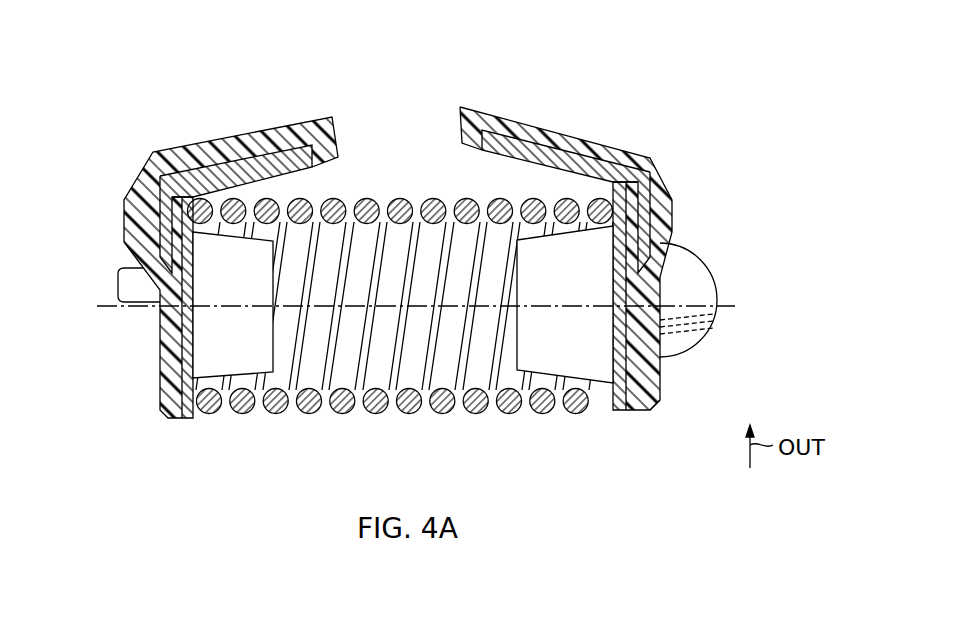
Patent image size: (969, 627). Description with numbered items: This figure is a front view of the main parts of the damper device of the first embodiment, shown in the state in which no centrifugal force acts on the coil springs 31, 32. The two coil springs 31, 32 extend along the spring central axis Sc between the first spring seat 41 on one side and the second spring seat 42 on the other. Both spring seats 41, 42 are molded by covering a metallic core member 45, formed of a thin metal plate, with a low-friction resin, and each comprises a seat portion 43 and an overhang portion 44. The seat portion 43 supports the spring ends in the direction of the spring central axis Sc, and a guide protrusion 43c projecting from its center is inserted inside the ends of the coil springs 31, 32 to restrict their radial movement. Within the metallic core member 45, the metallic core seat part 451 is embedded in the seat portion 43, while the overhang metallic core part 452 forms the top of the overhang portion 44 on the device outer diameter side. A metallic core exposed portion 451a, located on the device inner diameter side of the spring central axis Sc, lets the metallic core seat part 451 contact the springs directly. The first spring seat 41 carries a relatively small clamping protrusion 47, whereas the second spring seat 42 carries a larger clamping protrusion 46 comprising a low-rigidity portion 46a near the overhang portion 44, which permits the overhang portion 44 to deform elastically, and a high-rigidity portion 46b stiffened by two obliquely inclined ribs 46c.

The coil spring 31 is at (401, 337).
The coil spring 32 is at (310, 395).
The first spring seat 41 is at (124, 191).
The second spring seat 42 is at (656, 166).
The seat portion 43 is at (160, 370).
The guide protrusion 43c is at (238, 357).
The overhang portion 44 is at (240, 128).
The metallic core member 45 is at (411, 227).
The metallic core seat part 451 is at (160, 211).
The metallic core exposed portion 451a is at (612, 372).
The overhang metallic core part 452 is at (401, 141).
The clamping protrusion 46 is at (724, 311).
The low-rigidity portion 46a is at (690, 256).
The high-rigidity portion 46b is at (673, 345).
The rib 46c is at (682, 328).
The clamping protrusion 47 is at (118, 279).
The spring central axis Sc is at (107, 311).